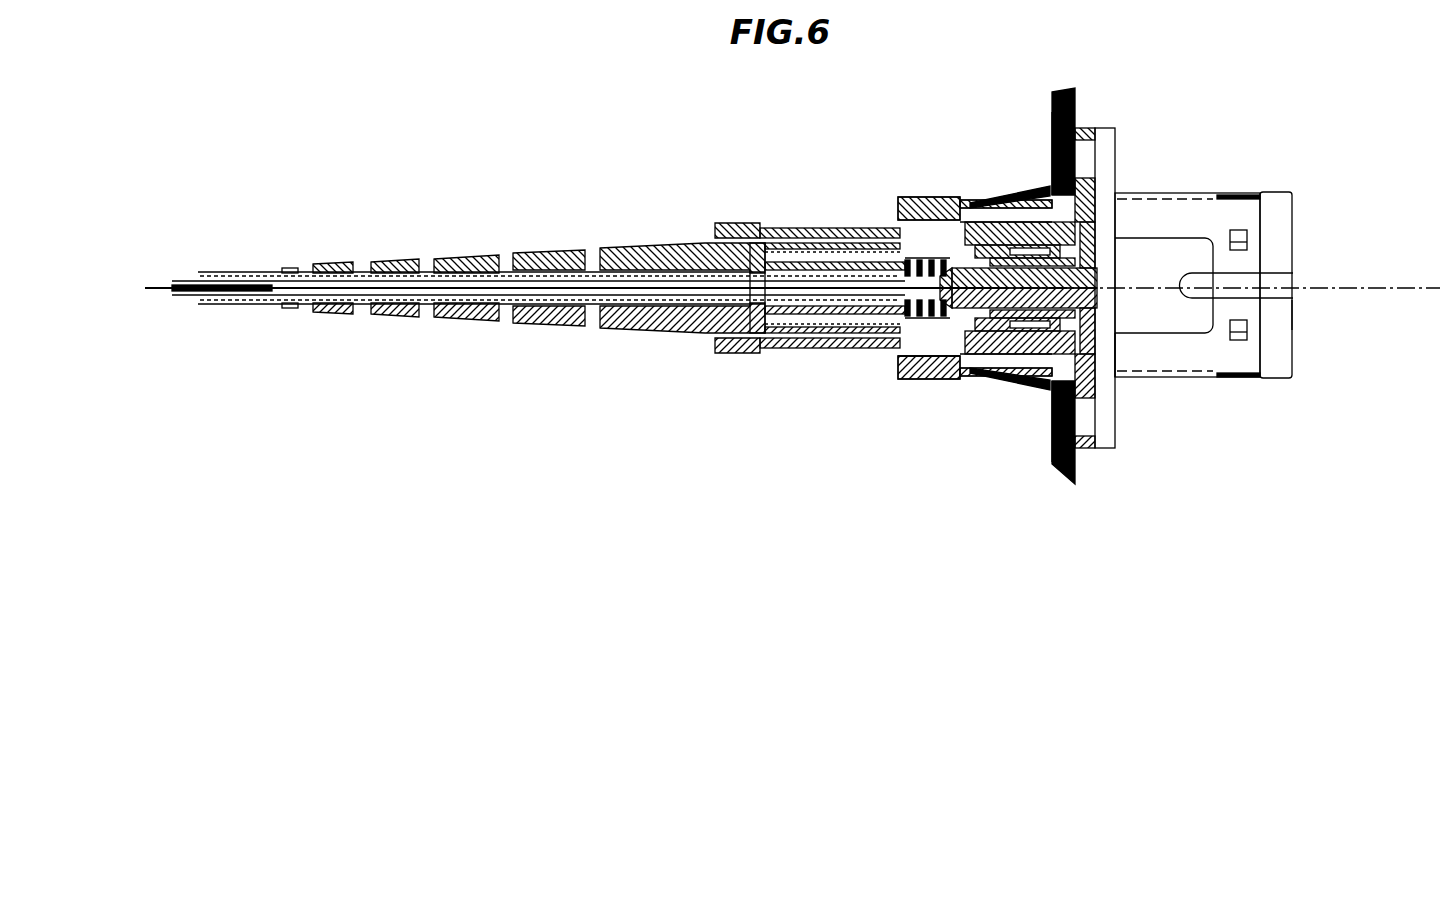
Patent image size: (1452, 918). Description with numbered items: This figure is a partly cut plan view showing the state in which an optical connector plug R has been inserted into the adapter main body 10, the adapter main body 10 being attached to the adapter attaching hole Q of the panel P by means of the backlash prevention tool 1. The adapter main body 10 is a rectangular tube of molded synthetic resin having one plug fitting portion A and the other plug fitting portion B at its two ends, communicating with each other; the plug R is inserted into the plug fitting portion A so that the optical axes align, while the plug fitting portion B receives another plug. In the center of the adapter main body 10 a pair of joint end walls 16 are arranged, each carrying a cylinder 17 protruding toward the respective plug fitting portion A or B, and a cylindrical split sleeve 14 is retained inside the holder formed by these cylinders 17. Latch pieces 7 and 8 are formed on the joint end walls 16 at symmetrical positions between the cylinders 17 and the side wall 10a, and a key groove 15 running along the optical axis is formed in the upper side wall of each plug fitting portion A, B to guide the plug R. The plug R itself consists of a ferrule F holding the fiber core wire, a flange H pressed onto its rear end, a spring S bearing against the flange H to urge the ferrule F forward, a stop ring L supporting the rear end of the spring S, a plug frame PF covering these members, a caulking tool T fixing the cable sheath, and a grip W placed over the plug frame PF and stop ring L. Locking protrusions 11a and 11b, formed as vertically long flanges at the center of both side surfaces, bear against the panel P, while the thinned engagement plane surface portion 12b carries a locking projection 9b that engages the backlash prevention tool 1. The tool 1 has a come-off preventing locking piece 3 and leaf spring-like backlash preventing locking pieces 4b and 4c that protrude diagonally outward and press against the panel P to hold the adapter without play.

The backlash prevention tool 1 is at (940, 190).
The come-off preventing locking piece 3 is at (1020, 188).
The backlash preventing locking piece 4b is at (1033, 180).
The backlash preventing locking piece 4c is at (1005, 86).
The latch piece 7 is at (970, 195).
The latch piece 8 is at (953, 378).
The locking projection 9b is at (1247, 250).
The adapter main body 10 is at (1300, 205).
The side wall 10a is at (893, 368).
The locking protrusion 11a is at (1087, 127).
The locking protrusion 11b is at (1078, 472).
The engagement plane surface portion 12b is at (1237, 200).
The split sleeve 14 is at (1100, 265).
The key groove 15 is at (1298, 283).
The joint end wall 16 is at (1120, 330).
The cylinder 17 is at (990, 372).
The panel P is at (1058, 97).
The plug frame PF is at (917, 194).
The plug fitting portion A is at (880, 213).
The grip W is at (785, 228).
The caulking tool T is at (703, 243).
The optical connector plug R is at (615, 237).
The adapter attaching hole Q is at (1098, 205).
The ferrule F is at (1100, 303).
The plug fitting portion B is at (1302, 318).
The stop ring L is at (760, 348).
The spring S is at (853, 352).
The flange H is at (883, 355).